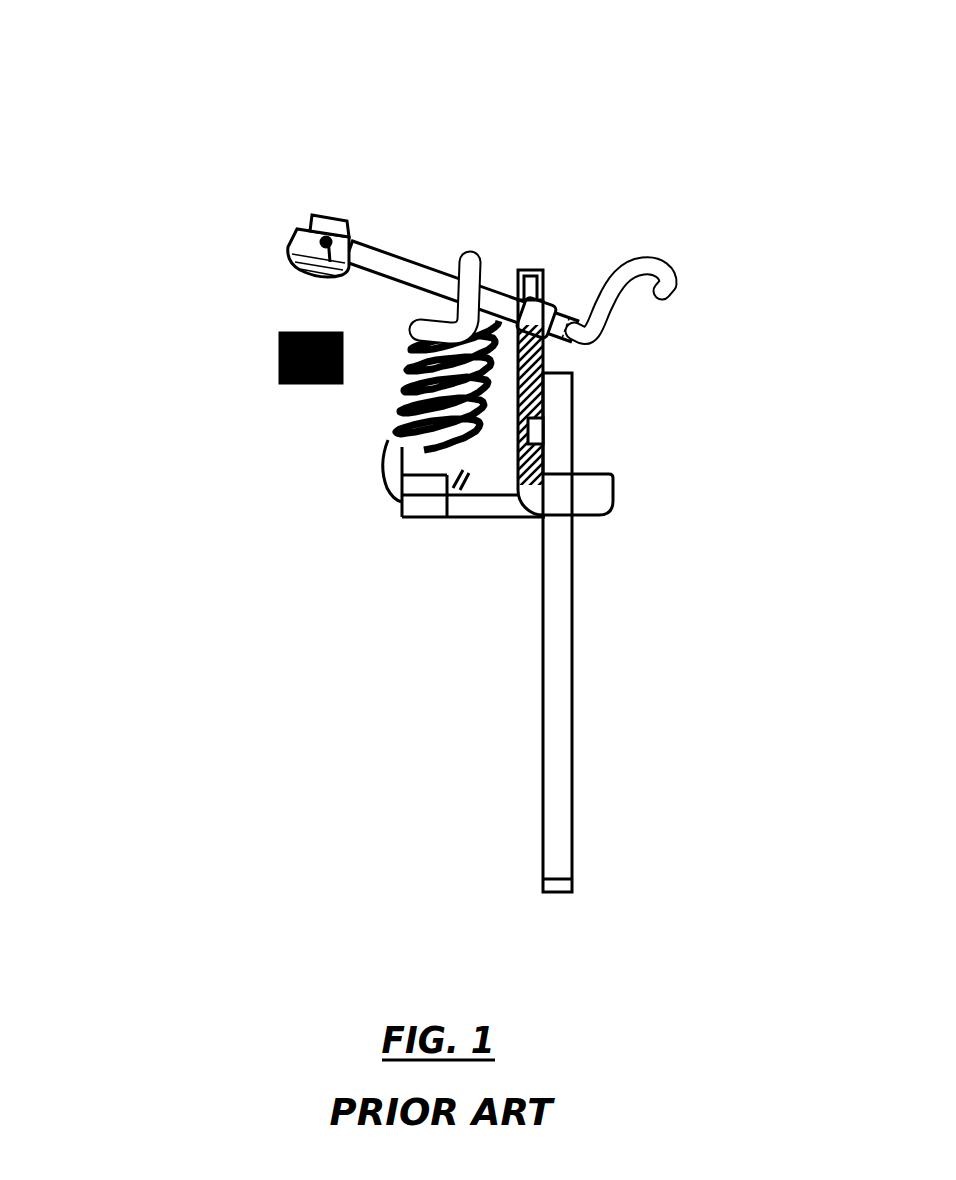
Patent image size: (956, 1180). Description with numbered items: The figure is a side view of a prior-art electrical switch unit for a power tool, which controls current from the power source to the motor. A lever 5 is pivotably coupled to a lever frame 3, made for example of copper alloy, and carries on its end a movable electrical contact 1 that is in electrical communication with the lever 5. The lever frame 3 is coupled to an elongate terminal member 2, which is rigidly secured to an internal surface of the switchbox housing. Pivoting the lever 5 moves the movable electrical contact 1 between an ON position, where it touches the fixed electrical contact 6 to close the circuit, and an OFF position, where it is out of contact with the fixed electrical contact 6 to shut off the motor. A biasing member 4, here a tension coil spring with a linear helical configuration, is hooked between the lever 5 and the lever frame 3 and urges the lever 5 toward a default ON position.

The movable electrical contact 1 is at (338, 222).
The elongate terminal member 2 is at (560, 575).
The lever frame 3 is at (470, 507).
The biasing member 4 is at (407, 383).
The lever 5 is at (413, 265).
The fixed electrical contact 6 is at (280, 334).